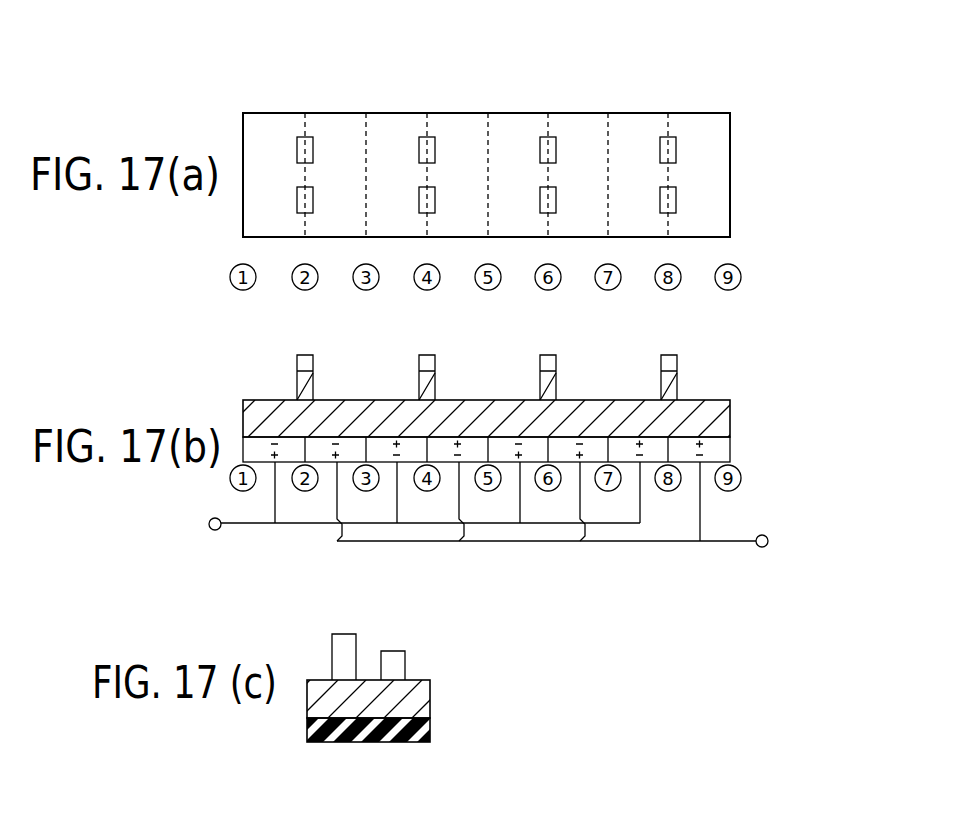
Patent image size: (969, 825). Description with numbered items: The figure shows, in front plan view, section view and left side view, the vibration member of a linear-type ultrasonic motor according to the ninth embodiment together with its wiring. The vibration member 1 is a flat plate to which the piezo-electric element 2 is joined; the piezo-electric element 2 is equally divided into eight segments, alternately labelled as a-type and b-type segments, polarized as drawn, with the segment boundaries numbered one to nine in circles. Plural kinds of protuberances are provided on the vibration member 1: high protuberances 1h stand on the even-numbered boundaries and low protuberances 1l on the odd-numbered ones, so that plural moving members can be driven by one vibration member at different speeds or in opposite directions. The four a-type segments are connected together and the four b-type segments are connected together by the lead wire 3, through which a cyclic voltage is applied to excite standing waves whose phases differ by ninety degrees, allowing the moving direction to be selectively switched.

In FIG. 17A, the vibration member 1 is at (725, 150).
In FIG. 17B, the vibration member 1 is at (716, 418).
In FIG. 17C, the vibration member 1 is at (412, 697).
In FIG. 17A, the high protuberances 1h is at (549, 138).
In FIG. 17B, the high protuberances 1h is at (540, 362).
In FIG. 17C, the high protuberances 1h is at (345, 645).
In FIG. 17A, the low protuberances 1l is at (543, 186).
In FIG. 17B, the low protuberances 1l is at (552, 388).
In FIG. 17C, the low protuberances 1l is at (393, 662).
In FIG. 17B, the piezo-electric element 2 is at (728, 445).
In FIG. 17C, the piezo-electric element 2 is at (427, 730).
In FIG. 17B, the lead wire 3 is at (678, 543).